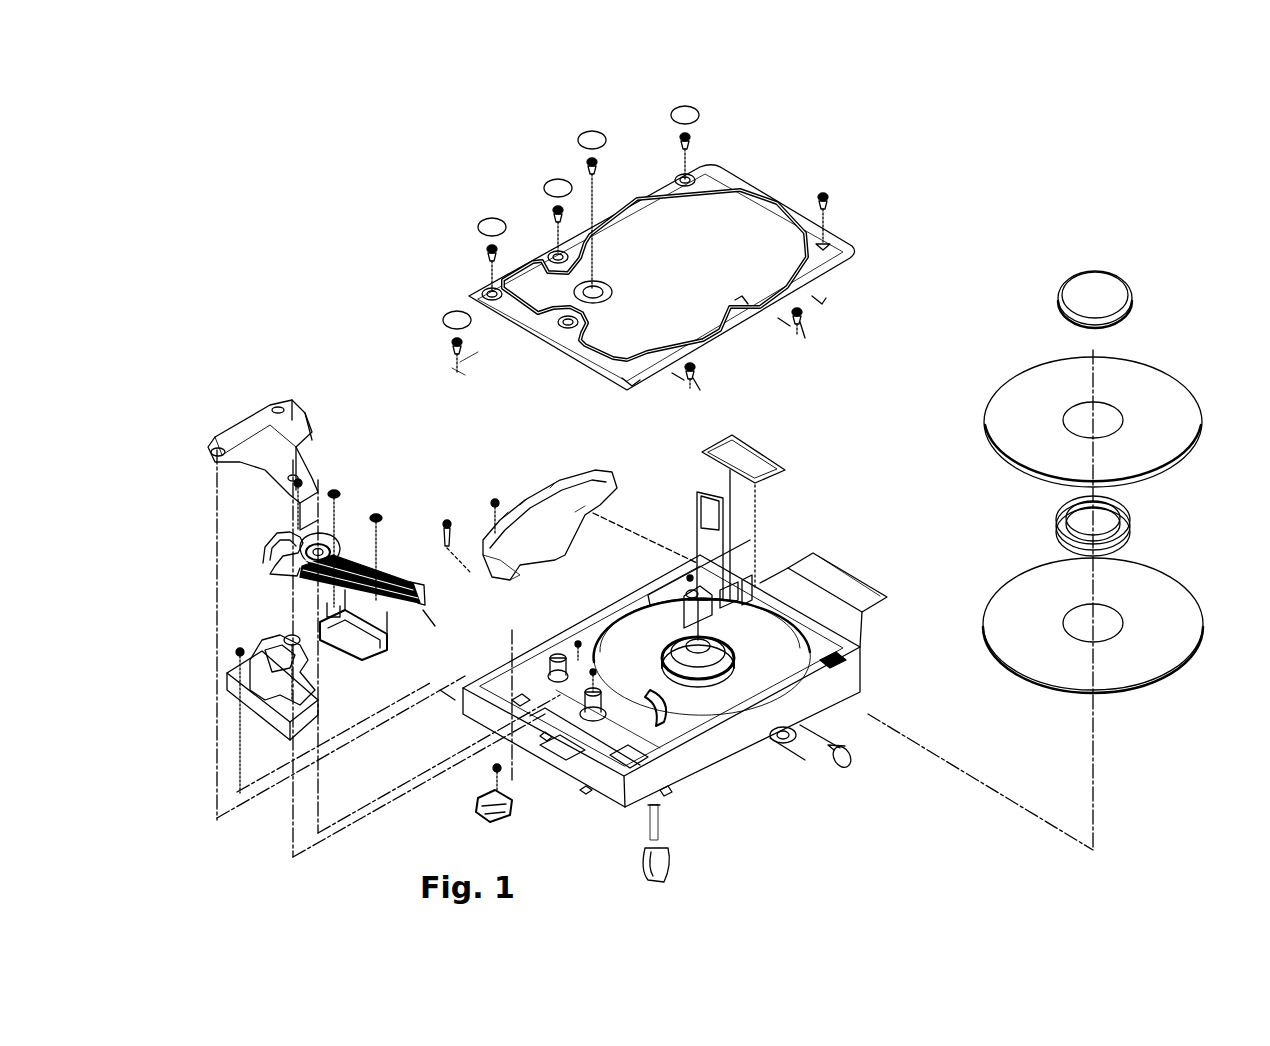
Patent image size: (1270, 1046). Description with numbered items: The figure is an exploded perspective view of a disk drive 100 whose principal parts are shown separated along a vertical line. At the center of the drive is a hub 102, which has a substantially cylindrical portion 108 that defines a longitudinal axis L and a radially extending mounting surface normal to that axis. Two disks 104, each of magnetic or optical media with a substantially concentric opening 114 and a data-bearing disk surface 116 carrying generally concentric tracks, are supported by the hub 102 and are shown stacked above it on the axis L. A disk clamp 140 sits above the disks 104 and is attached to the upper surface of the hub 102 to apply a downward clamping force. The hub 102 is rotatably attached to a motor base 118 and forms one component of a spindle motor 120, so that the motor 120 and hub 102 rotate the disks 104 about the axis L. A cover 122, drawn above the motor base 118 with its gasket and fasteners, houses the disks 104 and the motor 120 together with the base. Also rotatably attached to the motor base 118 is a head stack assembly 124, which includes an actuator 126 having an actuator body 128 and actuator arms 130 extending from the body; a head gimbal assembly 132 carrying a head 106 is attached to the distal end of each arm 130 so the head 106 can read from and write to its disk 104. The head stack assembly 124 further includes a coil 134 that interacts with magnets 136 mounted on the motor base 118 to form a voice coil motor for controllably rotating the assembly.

The disk drive 100 is at (250, 148).
The hub 102 is at (812, 718).
The disk 104 is at (988, 404).
The head 106 is at (430, 578).
The substantially cylindrical portion 108 is at (728, 680).
The concentric opening 114 is at (1108, 408).
The disk surface 116 is at (1186, 410).
The motor base 118 is at (866, 700).
The motor 120 is at (680, 640).
The cover 122 is at (840, 286).
The head stack assembly 124 is at (416, 625).
The actuator 126 is at (320, 518).
The actuator body 128 is at (338, 533).
The actuator arm 130 is at (358, 538).
The head gimbal assembly 132 is at (414, 565).
The coil 134 is at (262, 540).
The magnet 136 is at (268, 668).
The disk clamp 140 is at (1058, 297).
The longitudinal axis L is at (1096, 770).